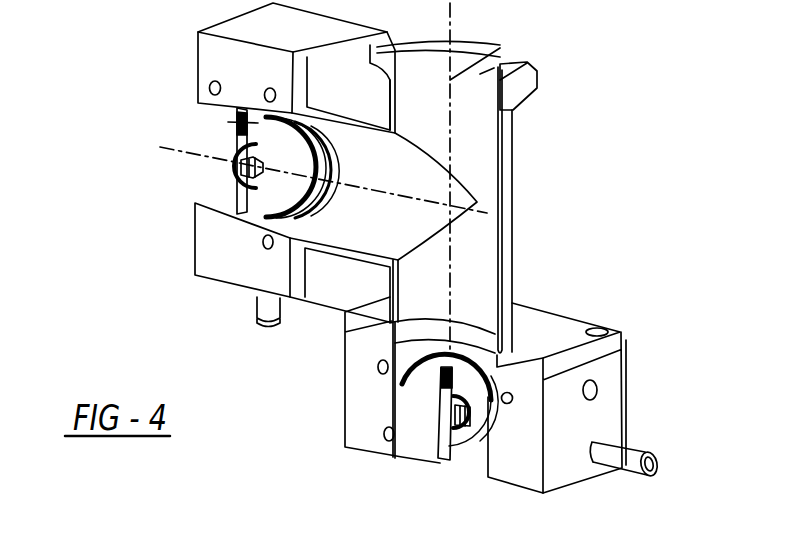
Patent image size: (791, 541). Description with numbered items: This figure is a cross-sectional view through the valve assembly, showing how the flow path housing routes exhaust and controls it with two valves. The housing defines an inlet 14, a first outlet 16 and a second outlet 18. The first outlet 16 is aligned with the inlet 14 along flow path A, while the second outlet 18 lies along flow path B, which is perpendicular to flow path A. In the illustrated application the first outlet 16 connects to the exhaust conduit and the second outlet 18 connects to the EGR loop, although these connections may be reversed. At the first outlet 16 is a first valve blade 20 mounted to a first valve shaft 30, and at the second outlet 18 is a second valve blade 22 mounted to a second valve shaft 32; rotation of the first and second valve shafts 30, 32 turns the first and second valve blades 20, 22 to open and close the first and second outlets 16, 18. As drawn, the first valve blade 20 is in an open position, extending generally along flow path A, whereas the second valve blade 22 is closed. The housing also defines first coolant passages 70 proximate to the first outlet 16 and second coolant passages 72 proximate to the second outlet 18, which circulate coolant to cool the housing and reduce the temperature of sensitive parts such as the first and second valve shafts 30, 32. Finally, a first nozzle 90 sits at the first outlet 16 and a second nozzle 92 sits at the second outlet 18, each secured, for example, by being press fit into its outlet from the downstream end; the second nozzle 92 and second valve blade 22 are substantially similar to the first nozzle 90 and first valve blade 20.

The inlet 14 is at (537, 67).
The first outlet 16 is at (430, 450).
The second outlet 18 is at (240, 203).
The first valve blade 20 is at (456, 448).
The second valve blade 22 is at (250, 127).
The first valve shaft 30 is at (440, 407).
The second valve shaft 32 is at (240, 170).
The first coolant passages 70 is at (509, 393).
The second coolant passages 72 is at (212, 82).
The first nozzle 90 is at (420, 382).
The second nozzle 92 is at (240, 210).
The flow path A is at (505, 45).
The flow path B is at (165, 156).